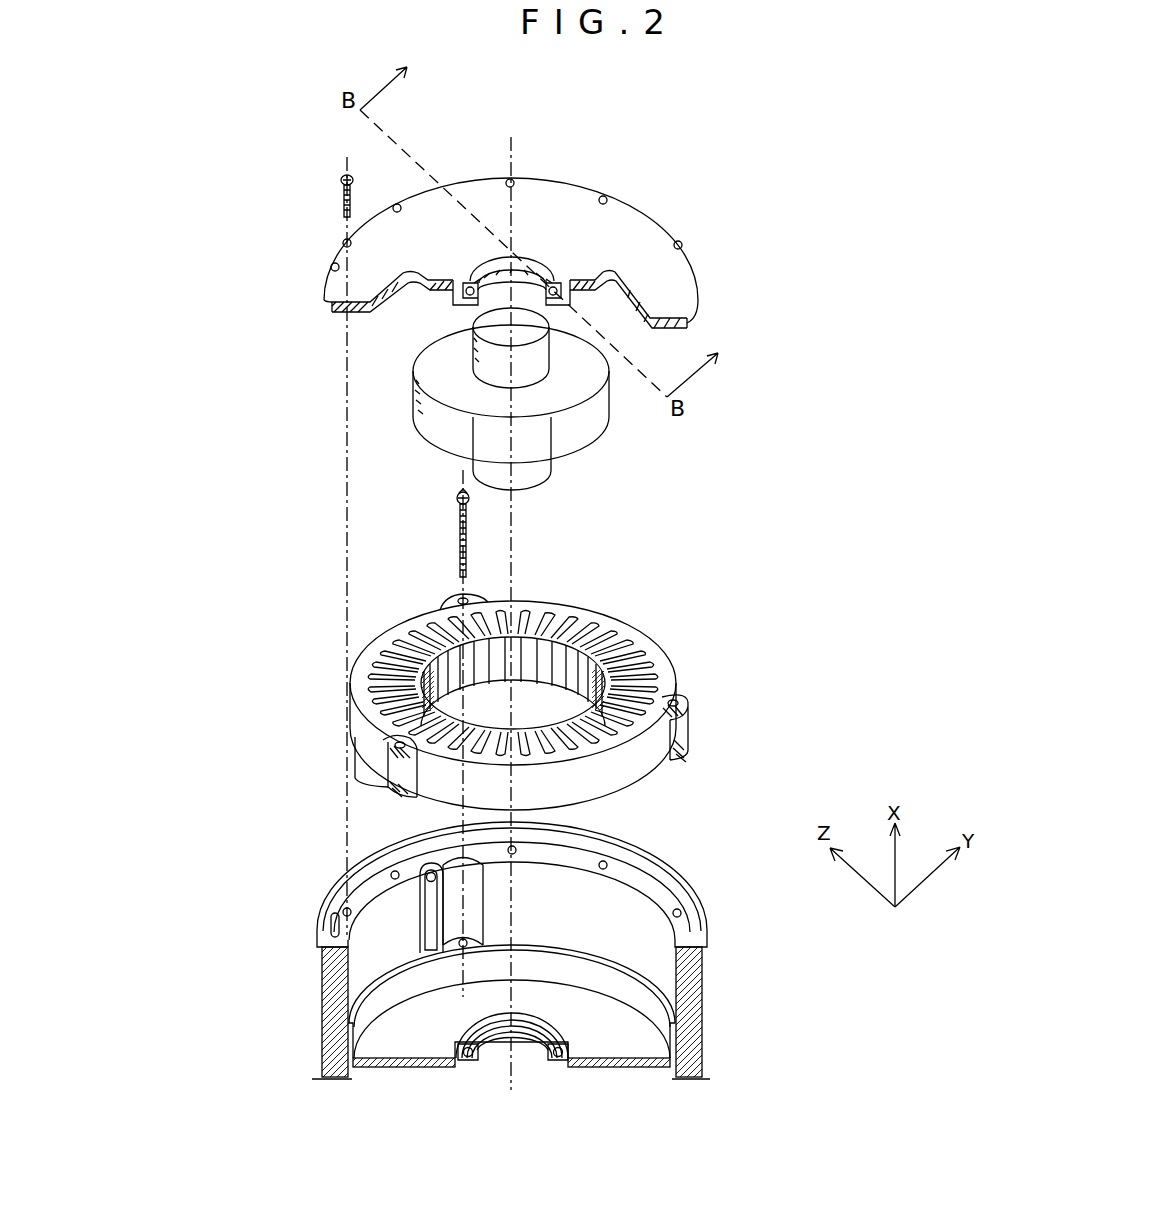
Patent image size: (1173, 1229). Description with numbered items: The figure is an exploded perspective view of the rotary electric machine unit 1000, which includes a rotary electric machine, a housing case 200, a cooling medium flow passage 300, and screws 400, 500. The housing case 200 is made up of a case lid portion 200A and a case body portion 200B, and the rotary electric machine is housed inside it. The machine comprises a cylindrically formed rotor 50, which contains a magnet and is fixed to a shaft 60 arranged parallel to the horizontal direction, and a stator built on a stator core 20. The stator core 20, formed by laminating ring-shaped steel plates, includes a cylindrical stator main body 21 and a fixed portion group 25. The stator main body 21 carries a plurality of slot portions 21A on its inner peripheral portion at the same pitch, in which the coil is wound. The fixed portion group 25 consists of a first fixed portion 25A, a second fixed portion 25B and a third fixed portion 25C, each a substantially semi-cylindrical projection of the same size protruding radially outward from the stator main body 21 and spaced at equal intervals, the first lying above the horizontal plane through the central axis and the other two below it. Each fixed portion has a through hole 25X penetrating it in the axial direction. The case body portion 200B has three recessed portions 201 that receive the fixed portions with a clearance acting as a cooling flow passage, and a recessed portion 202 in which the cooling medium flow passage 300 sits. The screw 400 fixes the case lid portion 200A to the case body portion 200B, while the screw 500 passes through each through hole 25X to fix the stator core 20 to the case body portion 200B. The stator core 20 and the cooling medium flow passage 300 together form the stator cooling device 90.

The rotary electric machine unit 1000 is at (850, 176).
The screw 400 is at (342, 179).
The housing case 200 is at (570, 628).
The case lid portion 200A is at (678, 288).
The case body portion 200B is at (688, 880).
The recessed portion 201 is at (480, 856).
The recessed portion 202 is at (419, 873).
The cooling medium flow passage 300 is at (422, 903).
The rotor 50 is at (421, 403).
The shaft 60 is at (545, 474).
The screw 500 is at (461, 549).
The stator cooling device 90 is at (247, 768).
The stator core 20 is at (327, 745).
The stator main body 21 is at (674, 677).
The slot portions 21A is at (603, 633).
The fixed portion group 25 is at (600, 733).
The first fixed portion 25A is at (478, 604).
The second fixed portion 25B is at (690, 720).
The third fixed portion 25C is at (367, 716).
The through hole 25X is at (461, 600).